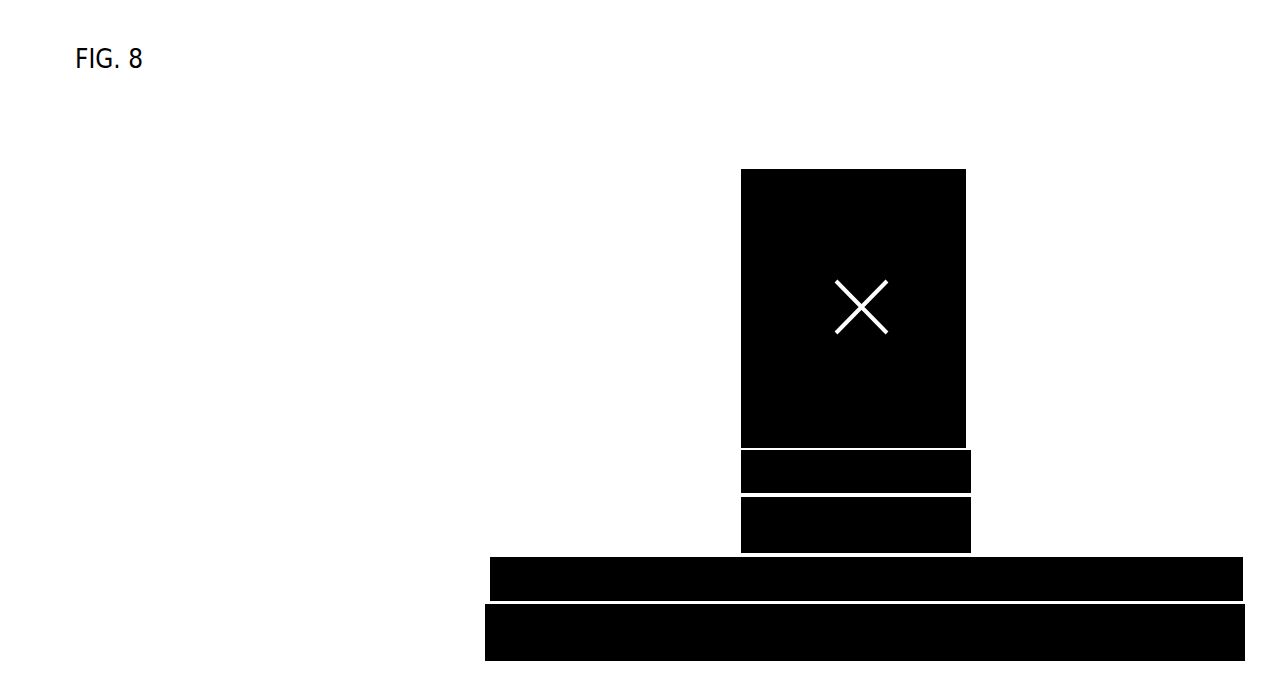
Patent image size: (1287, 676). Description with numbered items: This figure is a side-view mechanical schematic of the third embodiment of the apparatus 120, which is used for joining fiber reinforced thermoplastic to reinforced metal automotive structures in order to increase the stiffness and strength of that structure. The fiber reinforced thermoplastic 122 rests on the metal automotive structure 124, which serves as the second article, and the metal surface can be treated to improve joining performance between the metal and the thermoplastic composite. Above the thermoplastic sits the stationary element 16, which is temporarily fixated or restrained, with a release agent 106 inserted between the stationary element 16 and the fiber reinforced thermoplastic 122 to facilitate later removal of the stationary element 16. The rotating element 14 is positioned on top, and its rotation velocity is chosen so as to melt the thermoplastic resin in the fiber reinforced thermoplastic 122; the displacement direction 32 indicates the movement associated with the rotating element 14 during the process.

The rotating element 14 is at (933, 283).
The stationary element 16 is at (856, 471).
The displacement direction 32 is at (1071, 307).
The release agent 106 is at (733, 483).
The apparatus for joining fiber reinforced thermoplastic to reinforced metal automot 120 is at (417, 238).
The fiber reinforced thermoplastic 122 is at (733, 513).
The metal automotive structure 124 is at (866, 579).